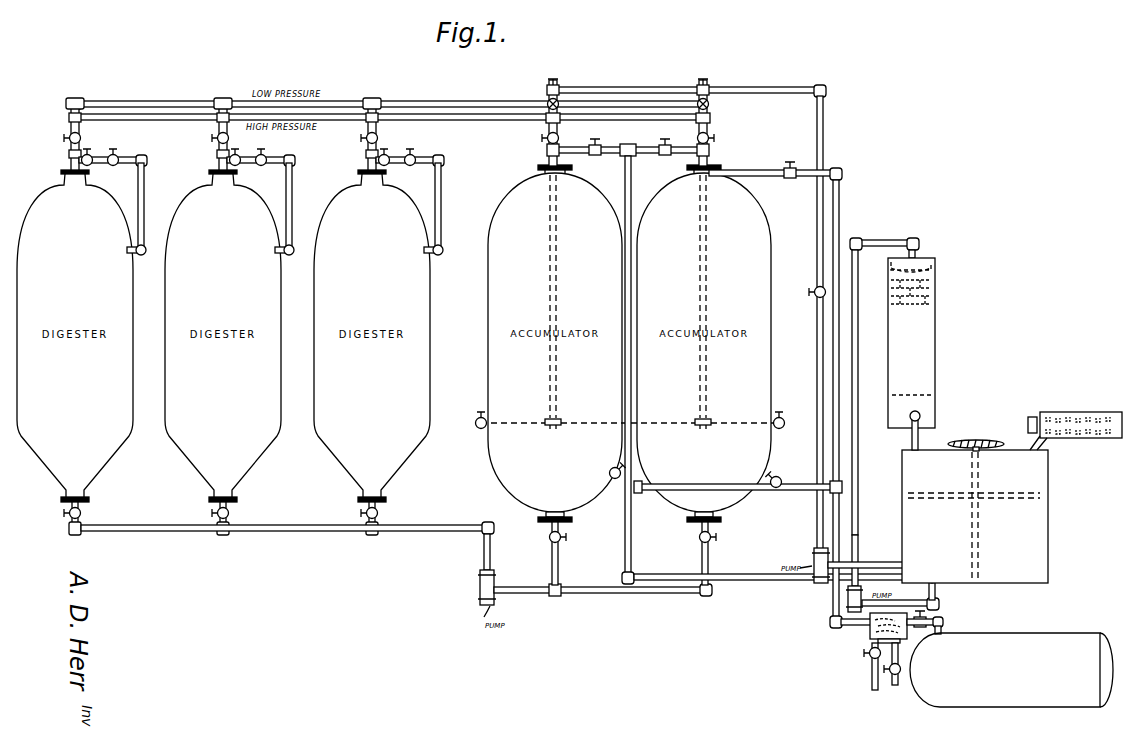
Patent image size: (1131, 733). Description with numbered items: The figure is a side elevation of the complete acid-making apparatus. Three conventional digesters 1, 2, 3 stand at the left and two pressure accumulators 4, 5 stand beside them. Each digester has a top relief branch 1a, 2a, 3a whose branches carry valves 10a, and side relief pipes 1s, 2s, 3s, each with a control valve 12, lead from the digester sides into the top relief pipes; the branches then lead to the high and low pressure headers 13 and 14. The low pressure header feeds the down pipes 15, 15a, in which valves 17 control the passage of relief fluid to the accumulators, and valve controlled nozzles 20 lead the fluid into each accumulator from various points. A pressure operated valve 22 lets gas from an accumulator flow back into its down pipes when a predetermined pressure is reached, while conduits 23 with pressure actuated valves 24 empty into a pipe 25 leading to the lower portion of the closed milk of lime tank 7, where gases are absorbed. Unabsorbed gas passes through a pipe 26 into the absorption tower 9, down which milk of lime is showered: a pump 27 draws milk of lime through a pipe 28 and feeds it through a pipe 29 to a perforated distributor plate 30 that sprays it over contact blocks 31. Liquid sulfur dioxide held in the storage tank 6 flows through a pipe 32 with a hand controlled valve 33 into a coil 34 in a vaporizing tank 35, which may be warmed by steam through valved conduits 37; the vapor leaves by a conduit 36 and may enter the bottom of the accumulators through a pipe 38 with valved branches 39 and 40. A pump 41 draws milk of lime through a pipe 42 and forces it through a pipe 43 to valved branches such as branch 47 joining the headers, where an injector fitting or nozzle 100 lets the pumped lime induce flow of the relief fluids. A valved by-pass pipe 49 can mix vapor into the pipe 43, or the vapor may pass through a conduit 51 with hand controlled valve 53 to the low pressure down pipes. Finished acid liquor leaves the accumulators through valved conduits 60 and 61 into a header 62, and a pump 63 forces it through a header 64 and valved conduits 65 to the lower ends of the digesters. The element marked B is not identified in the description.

The digester 1 is at (125, 385).
The digester 2 is at (272, 388).
The digester 3 is at (422, 409).
The top relief branch 1a is at (70, 160).
The top relief branch 2a is at (218, 160).
The top relief branch 3a is at (367, 160).
The side relief pipe 1s is at (141, 186).
The side relief pipe 2s is at (290, 194).
The side relief pipe 3s is at (440, 194).
The valve 10a is at (83, 138).
The control valve 12 is at (118, 156).
The high pressure header 13 is at (463, 117).
The low pressure header 14 is at (428, 104).
The pressure accumulator 4 is at (512, 462).
The pressure accumulator 5 is at (768, 448).
The down pipe 15 is at (548, 383).
The down pipe 15a is at (700, 381).
The valve 17 is at (560, 134).
The injector fitting or nozzle 100 is at (546, 118).
The pressure operated valve 22 is at (546, 152).
The conduit 23 is at (595, 155).
The pressure actuated valve 24 is at (645, 138).
The pipe 25 is at (632, 540).
The valve controlled nozzle 20 is at (479, 430).
The pipe 26 is at (920, 435).
The milk of lime tank 7 is at (1040, 477).
The feeding device B is at (1088, 411).
The absorption tower 9 is at (932, 350).
The perforated distributor plate 30 is at (920, 262).
The contact blocks 31 is at (932, 292).
The pipe 29 is at (858, 528).
The conduit 36 is at (858, 548).
The pipe 38 is at (795, 492).
The valved branch 39 is at (788, 478).
The valved branch 40 is at (612, 480).
The pump 41 is at (818, 584).
The pipe 42 is at (880, 556).
The pipe 43 is at (648, 89).
The valved branch 47 is at (715, 88).
The valved by-pass pipe 49 is at (826, 288).
The conduit 51 is at (770, 177).
The hand controlled valve 53 is at (790, 179).
The valved conduit 60 is at (560, 563).
The valved conduit 61 is at (700, 562).
The header 62 is at (603, 594).
The pump 63 is at (478, 586).
The header 64 is at (430, 532).
The valved conduit 65 is at (83, 516).
The pump 27 is at (838, 606).
The pipe 28 is at (915, 606).
The hand controlled valve 33 is at (926, 617).
The pipe 32 is at (946, 622).
The coil 34 is at (868, 632).
The vaporizing tank 35 is at (878, 642).
The valved conduits 37 is at (876, 692).
The storage tank 6 is at (1030, 640).